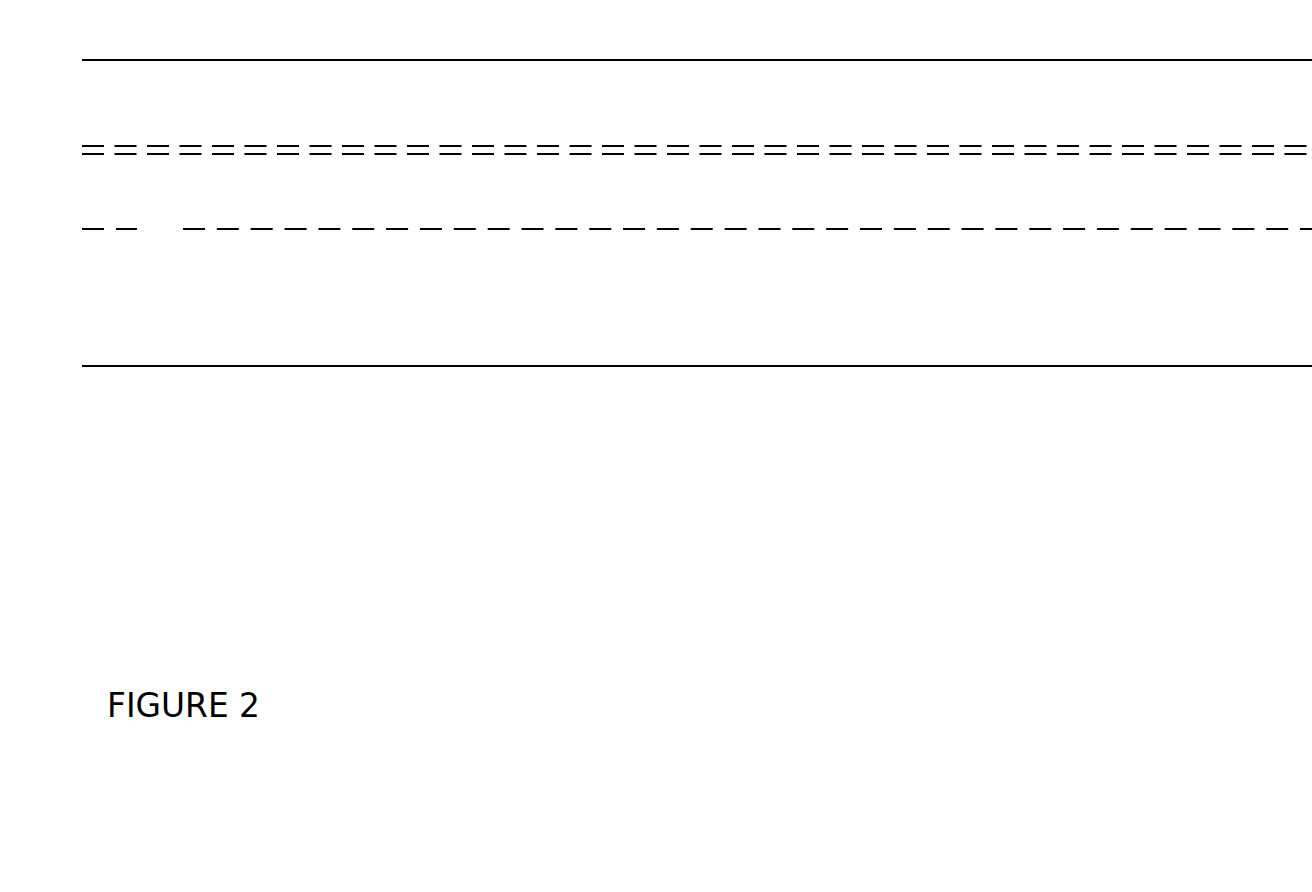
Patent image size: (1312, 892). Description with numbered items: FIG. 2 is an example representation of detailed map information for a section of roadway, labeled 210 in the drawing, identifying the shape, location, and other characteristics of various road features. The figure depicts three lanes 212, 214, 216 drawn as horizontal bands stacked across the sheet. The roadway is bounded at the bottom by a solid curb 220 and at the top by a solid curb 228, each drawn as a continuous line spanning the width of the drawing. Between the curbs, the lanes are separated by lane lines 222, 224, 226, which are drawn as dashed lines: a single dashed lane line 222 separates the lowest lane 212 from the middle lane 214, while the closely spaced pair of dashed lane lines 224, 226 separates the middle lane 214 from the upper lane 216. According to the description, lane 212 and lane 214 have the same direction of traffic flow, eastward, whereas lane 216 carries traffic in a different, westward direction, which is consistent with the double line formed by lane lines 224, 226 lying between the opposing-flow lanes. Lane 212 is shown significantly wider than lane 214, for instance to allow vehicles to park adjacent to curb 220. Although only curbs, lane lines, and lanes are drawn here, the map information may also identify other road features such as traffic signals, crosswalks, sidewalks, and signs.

The layered structure 210 is at (202, 664).
The lane 212 is at (697, 298).
The lane 214 is at (697, 191).
The lane 216 is at (697, 103).
The curb 220 is at (160, 366).
The lane line 222 is at (152, 230).
The lane line 224 is at (152, 154).
The lane line 226 is at (252, 146).
The curb 228 is at (167, 60).